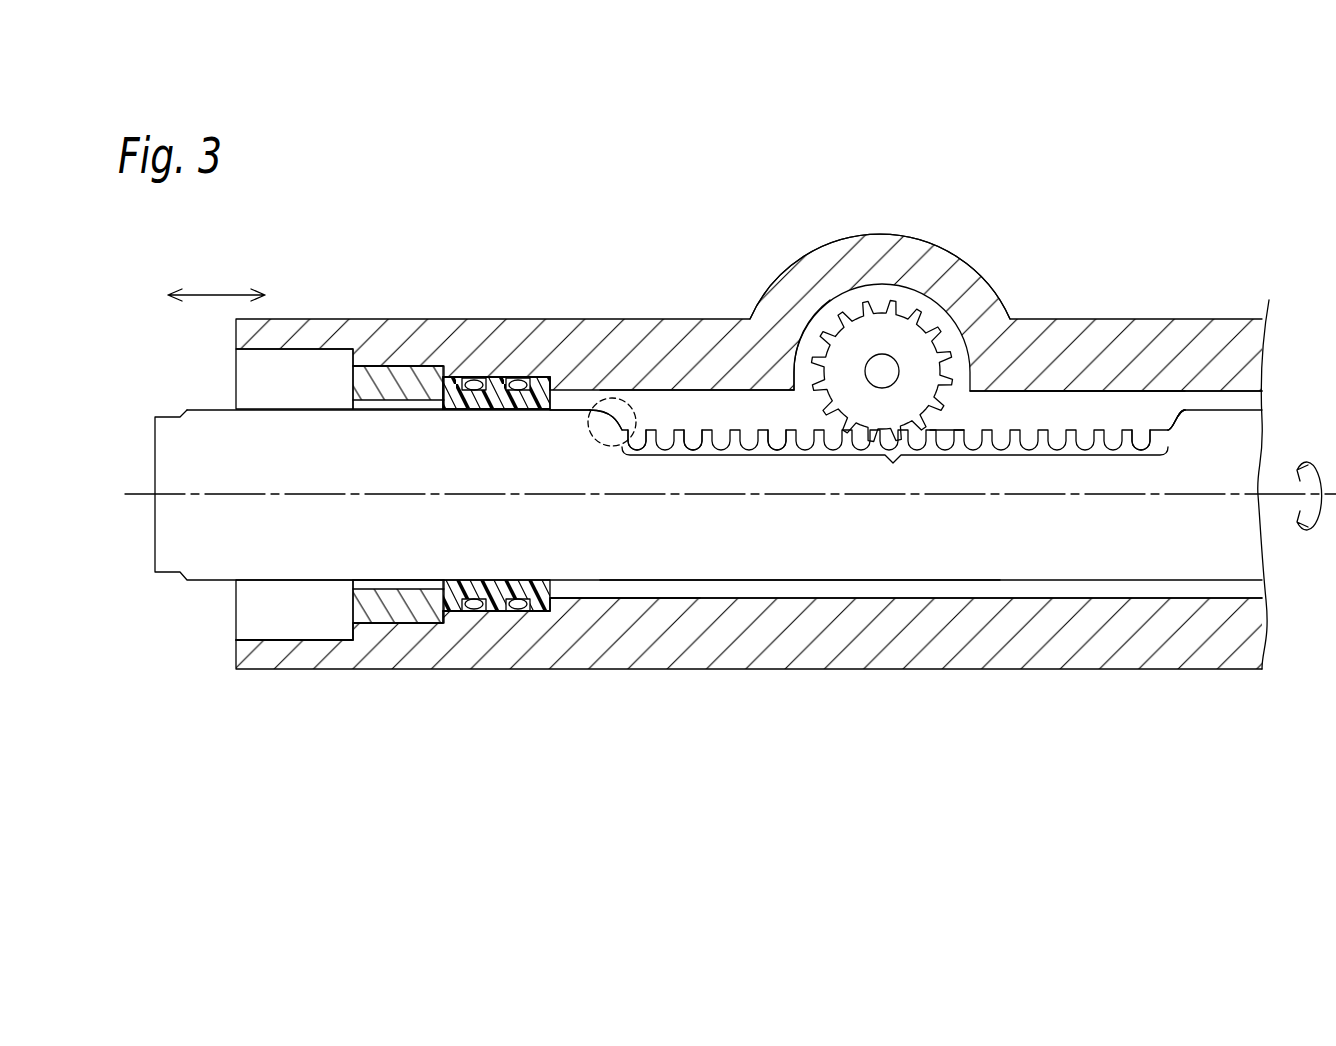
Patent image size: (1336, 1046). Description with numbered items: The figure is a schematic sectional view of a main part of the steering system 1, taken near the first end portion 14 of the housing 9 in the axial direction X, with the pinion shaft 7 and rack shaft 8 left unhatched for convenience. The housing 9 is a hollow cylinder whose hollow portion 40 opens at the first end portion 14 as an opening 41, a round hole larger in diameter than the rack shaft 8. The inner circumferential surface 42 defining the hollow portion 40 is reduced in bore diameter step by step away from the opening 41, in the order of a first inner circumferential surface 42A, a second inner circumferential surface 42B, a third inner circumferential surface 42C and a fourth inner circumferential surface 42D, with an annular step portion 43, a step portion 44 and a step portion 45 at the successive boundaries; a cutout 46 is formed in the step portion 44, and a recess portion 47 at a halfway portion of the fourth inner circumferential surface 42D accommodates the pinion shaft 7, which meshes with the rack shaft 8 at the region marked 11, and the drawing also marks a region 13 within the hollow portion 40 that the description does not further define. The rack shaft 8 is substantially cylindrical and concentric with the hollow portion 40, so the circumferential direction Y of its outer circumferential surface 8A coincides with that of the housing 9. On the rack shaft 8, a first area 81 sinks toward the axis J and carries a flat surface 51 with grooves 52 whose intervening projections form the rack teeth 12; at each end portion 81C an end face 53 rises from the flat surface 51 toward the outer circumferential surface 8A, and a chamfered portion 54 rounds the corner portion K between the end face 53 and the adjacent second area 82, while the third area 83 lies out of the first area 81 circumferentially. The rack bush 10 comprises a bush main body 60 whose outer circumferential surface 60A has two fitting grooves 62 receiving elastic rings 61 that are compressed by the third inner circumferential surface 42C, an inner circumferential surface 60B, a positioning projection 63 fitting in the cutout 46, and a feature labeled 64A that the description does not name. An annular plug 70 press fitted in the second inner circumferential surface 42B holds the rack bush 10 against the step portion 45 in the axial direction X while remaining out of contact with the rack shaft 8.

The steering system 1 is at (1263, 274).
The pinion shaft 7 is at (895, 333).
The rack shaft 8 is at (167, 426).
The outer circumferential surface 8A is at (566, 408).
The housing 9 is at (1168, 660).
The rack bush 10 is at (530, 412).
The meshing portion 11 is at (923, 423).
The rack teeth 12 is at (711, 443).
The clearance 13 is at (1076, 412).
The first end portion 14 is at (395, 335).
The hollow portion 40 is at (1000, 592).
The opening 41 is at (243, 624).
The inner circumferential surface 42 is at (300, 718).
The first inner circumferential surface 42A is at (327, 632).
The second inner circumferential surface 42B is at (413, 620).
The third inner circumferential surface 42C is at (497, 608).
The fourth inner circumferential surface 42D is at (568, 594).
The step portion 43 is at (343, 350).
The step portion 44 is at (440, 356).
The step portion 45 is at (545, 360).
The cutout 46 is at (445, 584).
The recess portion 47 is at (968, 350).
The flat surface 51 is at (793, 390).
The grooves 52 is at (689, 447).
The end face 53 is at (640, 390).
The chamfered portion 54 is at (614, 412).
The bush main body 60 is at (478, 381).
The outer circumferential surface 60A is at (460, 378).
The inner circumferential surface 60B is at (498, 559).
The elastic rings 61 is at (518, 378).
The fitting grooves 62 is at (516, 392).
The positioning projection 63 is at (488, 594).
The seal holder end face 64A is at (452, 410).
The plug 70 is at (371, 398).
The first area 81 is at (895, 461).
The end portion 81C is at (616, 444).
The second area 82 is at (558, 405).
The third area 83 is at (800, 582).
The corner portion K is at (598, 424).
The axial direction X is at (219, 292).
The circumferential direction Y is at (1303, 462).
The axis J is at (730, 515).